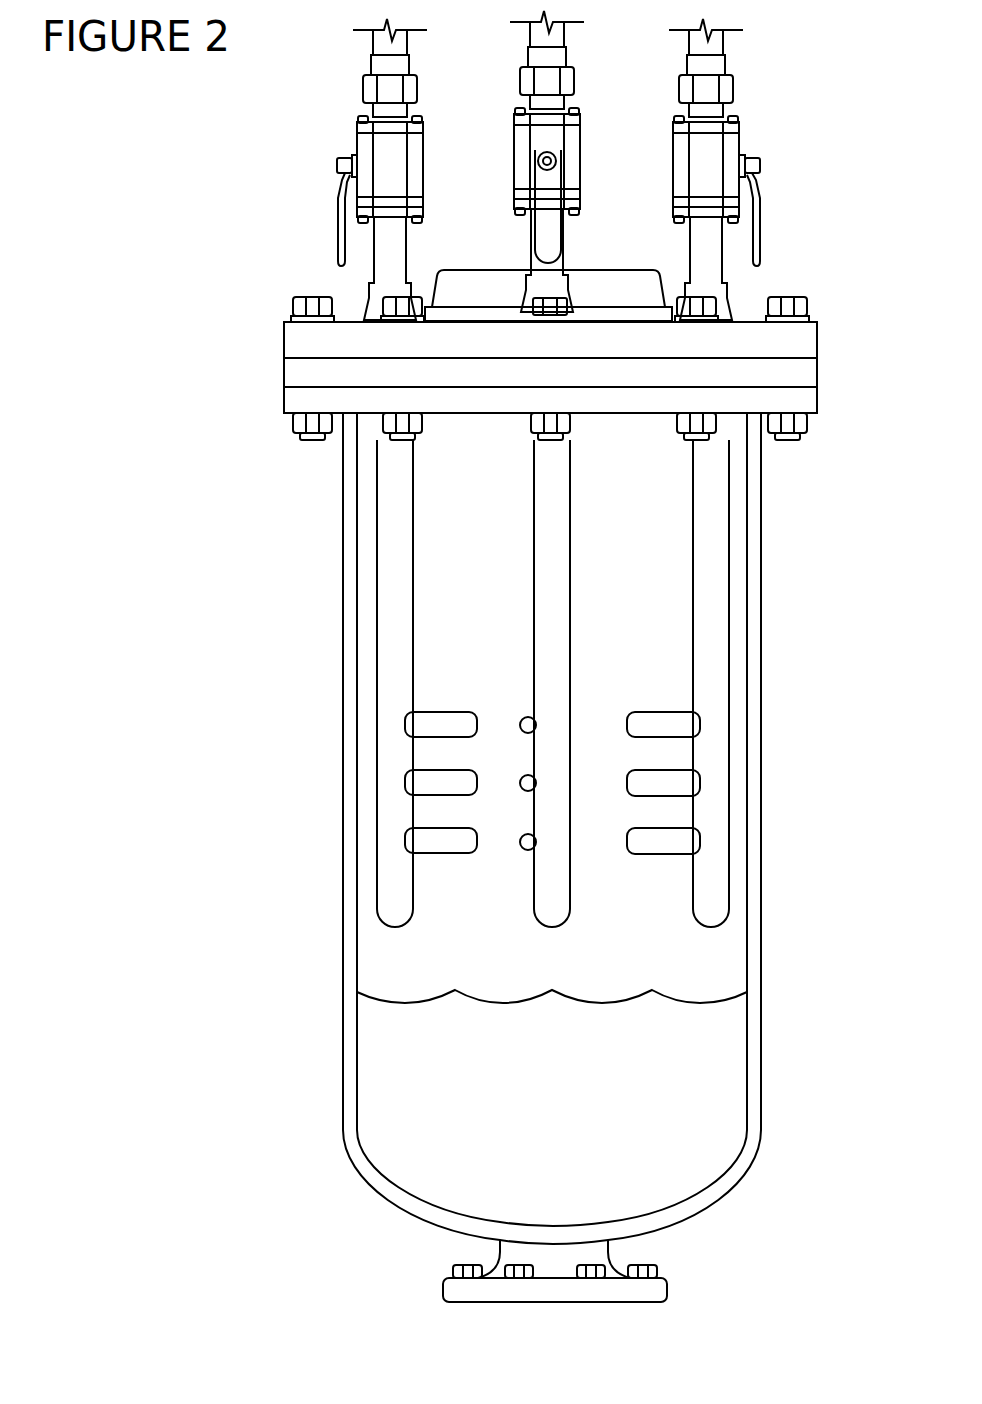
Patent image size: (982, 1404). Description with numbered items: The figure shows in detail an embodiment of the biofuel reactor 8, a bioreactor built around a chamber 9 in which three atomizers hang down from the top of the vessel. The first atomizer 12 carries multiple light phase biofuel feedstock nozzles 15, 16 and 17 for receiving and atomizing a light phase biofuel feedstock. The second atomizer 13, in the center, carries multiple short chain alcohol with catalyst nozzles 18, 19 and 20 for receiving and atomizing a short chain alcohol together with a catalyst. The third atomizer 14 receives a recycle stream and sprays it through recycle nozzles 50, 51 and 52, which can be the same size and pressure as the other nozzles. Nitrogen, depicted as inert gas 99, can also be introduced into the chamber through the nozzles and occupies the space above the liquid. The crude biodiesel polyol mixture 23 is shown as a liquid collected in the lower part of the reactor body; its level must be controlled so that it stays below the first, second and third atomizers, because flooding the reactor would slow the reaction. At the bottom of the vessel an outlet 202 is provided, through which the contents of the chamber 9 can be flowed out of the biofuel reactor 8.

The biofuel reactor 8 is at (498, 225).
The chamber 9 is at (579, 828).
The atomizer 12 is at (345, 683).
The atomizer 13 is at (524, 683).
The third atomizer 14 is at (758, 683).
The light phase biofuel feedstock nozzle 15 is at (376, 705).
The light phase biofuel feedstock nozzle 16 is at (376, 763).
The light phase biofuel feedstock nozzle 17 is at (376, 821).
The short chain alcohol with catalyst nozzle 18 is at (507, 706).
The short chain alcohol with catalyst nozzle 19 is at (507, 764).
The short chain alcohol with catalyst nozzle 20 is at (507, 824).
The crude biodiesel polyol mixture 23 is at (592, 1133).
The recycle nozzle 50 is at (727, 705).
The recycle nozzle 51 is at (727, 765).
The recycle nozzle 52 is at (727, 823).
The inert gas 99 is at (511, 944).
The outlet 202 is at (591, 1264).